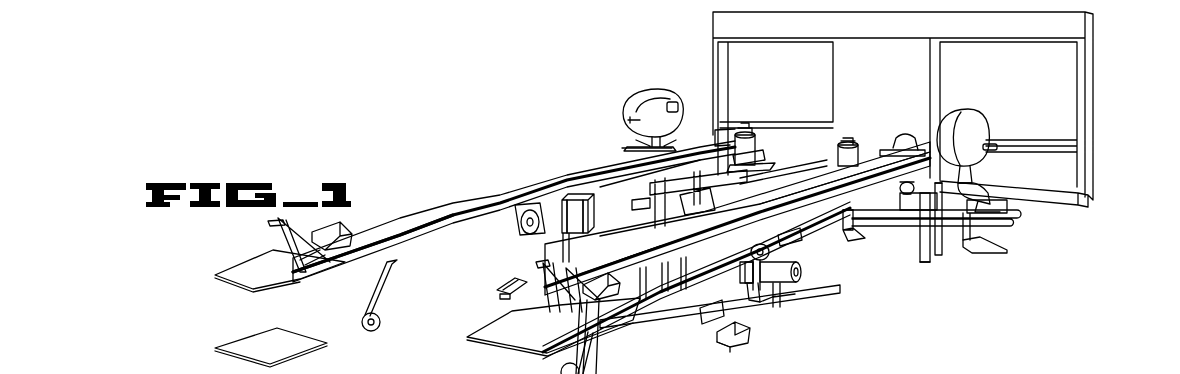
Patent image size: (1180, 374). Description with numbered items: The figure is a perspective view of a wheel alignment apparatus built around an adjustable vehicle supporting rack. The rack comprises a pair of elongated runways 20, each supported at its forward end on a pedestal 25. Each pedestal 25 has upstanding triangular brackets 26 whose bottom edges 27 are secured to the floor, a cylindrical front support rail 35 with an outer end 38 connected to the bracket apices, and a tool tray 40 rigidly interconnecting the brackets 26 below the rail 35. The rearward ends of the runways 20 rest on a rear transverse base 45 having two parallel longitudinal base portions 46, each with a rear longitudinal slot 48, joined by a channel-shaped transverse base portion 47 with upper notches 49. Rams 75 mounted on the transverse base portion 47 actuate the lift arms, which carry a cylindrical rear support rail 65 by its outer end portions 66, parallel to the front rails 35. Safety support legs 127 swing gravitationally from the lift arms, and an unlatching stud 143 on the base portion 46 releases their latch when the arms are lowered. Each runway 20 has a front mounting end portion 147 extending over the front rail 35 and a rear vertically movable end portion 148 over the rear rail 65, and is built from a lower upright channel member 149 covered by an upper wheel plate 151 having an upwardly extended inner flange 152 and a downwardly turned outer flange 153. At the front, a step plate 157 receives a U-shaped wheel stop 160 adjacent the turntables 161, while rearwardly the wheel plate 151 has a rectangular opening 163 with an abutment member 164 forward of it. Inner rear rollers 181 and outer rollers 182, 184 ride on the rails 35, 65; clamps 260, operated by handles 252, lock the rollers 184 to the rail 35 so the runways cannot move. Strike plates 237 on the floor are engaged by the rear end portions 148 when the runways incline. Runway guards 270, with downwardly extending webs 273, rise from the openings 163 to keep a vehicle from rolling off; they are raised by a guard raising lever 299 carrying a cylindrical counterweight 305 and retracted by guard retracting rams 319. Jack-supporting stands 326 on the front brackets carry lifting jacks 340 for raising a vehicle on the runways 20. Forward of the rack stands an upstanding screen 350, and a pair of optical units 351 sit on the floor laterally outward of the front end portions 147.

The runways 20 is at (455, 196).
The pedestal 25 is at (719, 155).
The brackets 26 is at (759, 196).
The bottom edges 27 is at (892, 242).
The front support rail 35 is at (840, 195).
The outer end 38 is at (1022, 373).
The tool tray 40 is at (910, 227).
The rear transverse base 45 is at (793, 324).
The longitudinal base portions 46 is at (494, 286).
The transverse base portion 47 is at (648, 318).
The rear longitudinal slot 48 is at (514, 276).
The upper notches 49 is at (716, 320).
The rear support rail 65 is at (612, 253).
The outer end portions 66 is at (803, 277).
The rams 75 is at (587, 181).
The safety support legs 127 is at (588, 214).
The unlatching stud 143 is at (590, 229).
The front mounting end portion 147 is at (638, 147).
The rear vertically movable end portion 148 is at (238, 273).
The channel member 149 is at (625, 182).
The wheel plate 151 is at (514, 190).
The inner flange 152 is at (437, 228).
The outer flange 153 is at (790, 200).
The step plate 157 is at (718, 133).
The wheel stop 160 is at (928, 134).
The turntables 161 is at (925, 145).
The openings 163 is at (283, 250).
The abutment member 164 is at (352, 238).
The inner rear roller 181 is at (552, 192).
The outer roller 182 is at (785, 262).
The outer roller 184 is at (973, 170).
The strike plates 237 is at (253, 343).
The handle 252 is at (747, 274).
The clamps 260 is at (941, 207).
The runway guards 270 is at (282, 223).
The webs 273 is at (328, 262).
The guard raising lever 299 is at (366, 302).
The counterweight 305 is at (381, 320).
The guard retracting rams 319 is at (600, 330).
The jack-supporting stands 326 is at (757, 153).
The lifting jacks 340 is at (747, 147).
The screen 350 is at (1060, 82).
The optical units 351 is at (660, 98).